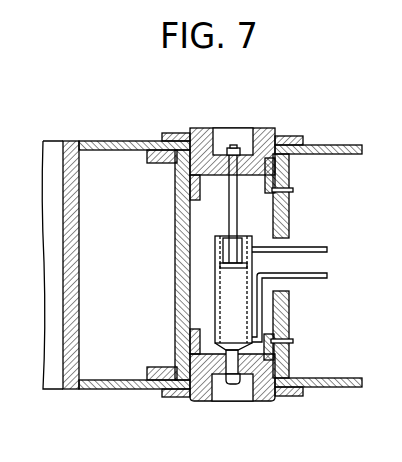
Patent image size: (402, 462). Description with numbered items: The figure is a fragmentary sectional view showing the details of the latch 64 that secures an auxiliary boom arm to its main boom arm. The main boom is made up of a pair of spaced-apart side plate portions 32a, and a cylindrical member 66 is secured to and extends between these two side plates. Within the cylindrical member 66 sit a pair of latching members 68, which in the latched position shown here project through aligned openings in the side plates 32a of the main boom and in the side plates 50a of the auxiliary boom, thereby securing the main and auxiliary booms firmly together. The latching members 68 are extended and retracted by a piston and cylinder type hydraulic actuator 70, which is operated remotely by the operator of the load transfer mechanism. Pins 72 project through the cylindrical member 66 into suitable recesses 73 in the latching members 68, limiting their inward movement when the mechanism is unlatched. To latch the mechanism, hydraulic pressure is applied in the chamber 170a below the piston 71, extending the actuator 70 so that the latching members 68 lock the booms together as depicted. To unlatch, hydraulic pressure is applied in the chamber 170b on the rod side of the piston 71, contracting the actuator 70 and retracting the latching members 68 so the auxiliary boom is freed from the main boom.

The side plates of auxiliary boom 50a is at (118, 141).
The latch 64 is at (199, 97).
The cylindrical member 66 is at (175, 210).
The latching members 68 is at (273, 130).
The side plate portions of main boom 32a is at (153, 161).
The recesses 73 is at (290, 178).
The pins 72 is at (292, 191).
The chamber below piston 170a is at (230, 295).
The chamber on rod side of piston 170b is at (225, 250).
The hydraulic actuator 70 is at (242, 264).
The piston 71 is at (252, 265).